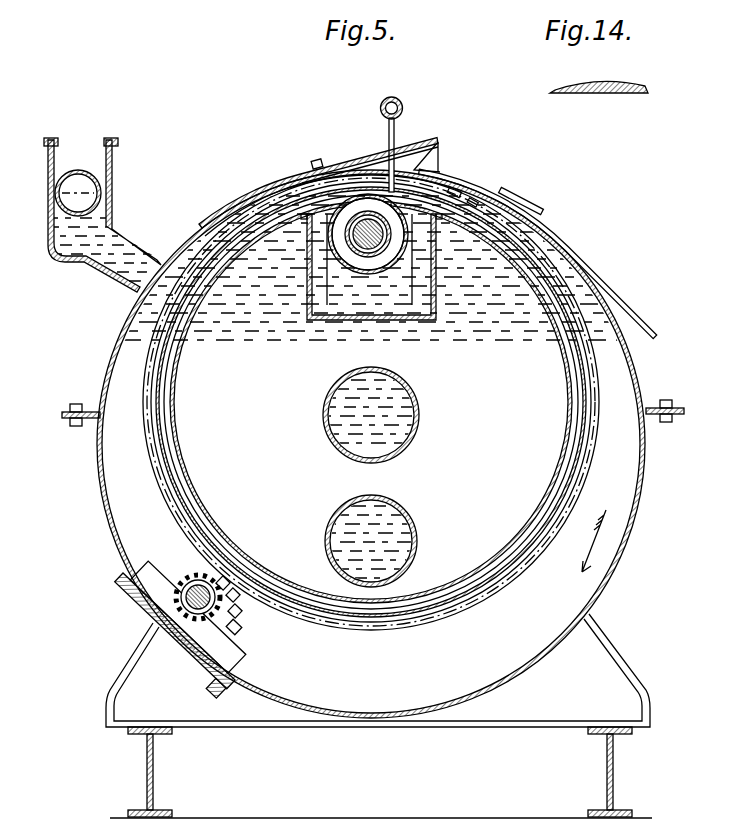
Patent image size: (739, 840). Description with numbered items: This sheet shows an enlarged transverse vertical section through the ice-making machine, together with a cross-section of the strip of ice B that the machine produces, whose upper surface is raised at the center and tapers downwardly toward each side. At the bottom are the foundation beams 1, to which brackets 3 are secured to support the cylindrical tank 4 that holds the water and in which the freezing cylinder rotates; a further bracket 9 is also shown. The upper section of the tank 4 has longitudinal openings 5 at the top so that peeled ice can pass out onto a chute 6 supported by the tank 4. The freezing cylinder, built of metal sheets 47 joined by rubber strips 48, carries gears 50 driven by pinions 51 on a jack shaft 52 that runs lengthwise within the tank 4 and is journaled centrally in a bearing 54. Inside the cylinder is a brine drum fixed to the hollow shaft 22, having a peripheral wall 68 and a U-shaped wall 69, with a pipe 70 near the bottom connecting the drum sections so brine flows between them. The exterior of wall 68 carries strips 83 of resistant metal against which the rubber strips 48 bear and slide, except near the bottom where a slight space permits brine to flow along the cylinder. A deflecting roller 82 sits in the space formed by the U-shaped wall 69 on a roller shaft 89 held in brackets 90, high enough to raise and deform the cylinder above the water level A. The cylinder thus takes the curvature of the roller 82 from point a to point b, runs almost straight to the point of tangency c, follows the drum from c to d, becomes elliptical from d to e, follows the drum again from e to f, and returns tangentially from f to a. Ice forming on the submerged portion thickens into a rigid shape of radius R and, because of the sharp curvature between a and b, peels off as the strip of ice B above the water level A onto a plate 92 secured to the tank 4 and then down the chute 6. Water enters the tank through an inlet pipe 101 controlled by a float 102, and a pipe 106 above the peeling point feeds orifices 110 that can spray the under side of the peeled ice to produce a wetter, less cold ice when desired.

In FIG. 5, the foundation beams 1 is at (153, 771).
In FIG. 5, the brackets 3 is at (140, 656).
In FIG. 5, the cylindrical tank 4 is at (642, 371).
In FIG. 5, the longitudinal openings 5 is at (353, 173).
In FIG. 5, the chute 6 is at (643, 302).
In FIG. 5, the bracket 9 is at (402, 170).
In FIG. 5, the hollow shaft 22 is at (420, 432).
In FIG. 5, the metal sheets 47 is at (540, 252).
In FIG. 5, the rubber strips 48 is at (252, 260).
In FIG. 5, the gears 50 is at (313, 627).
In FIG. 5, the pinions 51 is at (197, 617).
In FIG. 5, the jack shaft 52 is at (190, 600).
In FIG. 5, the bearing 54 is at (143, 567).
In FIG. 5, the peripheral wall 68 is at (437, 593).
In FIG. 5, the U-shaped wall 69 is at (437, 306).
In FIG. 5, the pipe 70 is at (418, 520).
In FIG. 5, the deflecting roller 82 is at (350, 272).
In FIG. 5, the strips 83 is at (350, 623).
In FIG. 5, the roller shaft 89 is at (368, 250).
In FIG. 5, the brackets 90 is at (400, 283).
In FIG. 5, the plate 92 is at (452, 183).
In FIG. 5, the inlet pipe 101 is at (128, 244).
In FIG. 5, the float 102 is at (92, 190).
In FIG. 5, the pipe 106 is at (403, 108).
In FIG. 5, the orifices 110 is at (380, 176).
In FIG. 5, the water level A is at (284, 177).
In FIG. 5, the strip of ice B is at (503, 193).
In FIG. 14, the strip of ice B is at (628, 89).
In FIG. 5, the point of tangency c is at (462, 200).
In FIG. 5, the point d is at (592, 427).
In FIG. 5, the point e is at (157, 378).
In FIG. 5, the point f is at (300, 190).
In FIG. 5, the point a is at (340, 182).
In FIG. 5, the point b is at (366, 198).
In FIG. 5, the radius R is at (573, 400).